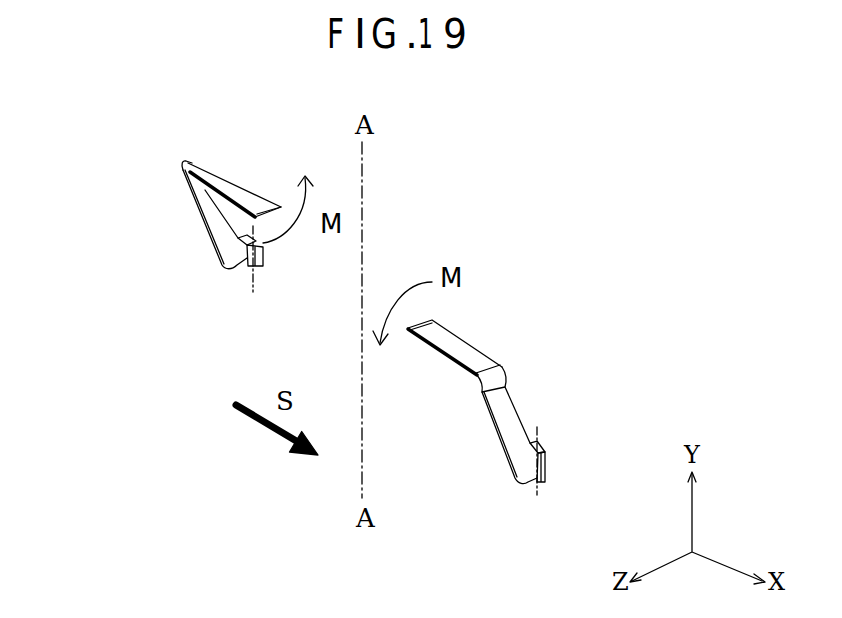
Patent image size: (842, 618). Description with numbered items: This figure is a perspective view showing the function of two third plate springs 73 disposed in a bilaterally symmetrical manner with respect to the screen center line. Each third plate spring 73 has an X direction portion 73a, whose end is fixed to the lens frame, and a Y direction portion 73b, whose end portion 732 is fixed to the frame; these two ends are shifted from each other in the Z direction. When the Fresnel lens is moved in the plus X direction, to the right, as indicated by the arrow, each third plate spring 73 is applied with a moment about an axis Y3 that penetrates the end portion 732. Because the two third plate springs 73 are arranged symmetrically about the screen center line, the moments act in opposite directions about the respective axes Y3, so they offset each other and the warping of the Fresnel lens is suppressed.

The third plate spring 73 is at (343, 298).
The X direction portion 73a is at (240, 185).
The Y direction portion 73b is at (212, 222).
The end portion 732 is at (265, 258).
The axis Y3 is at (399, 360).